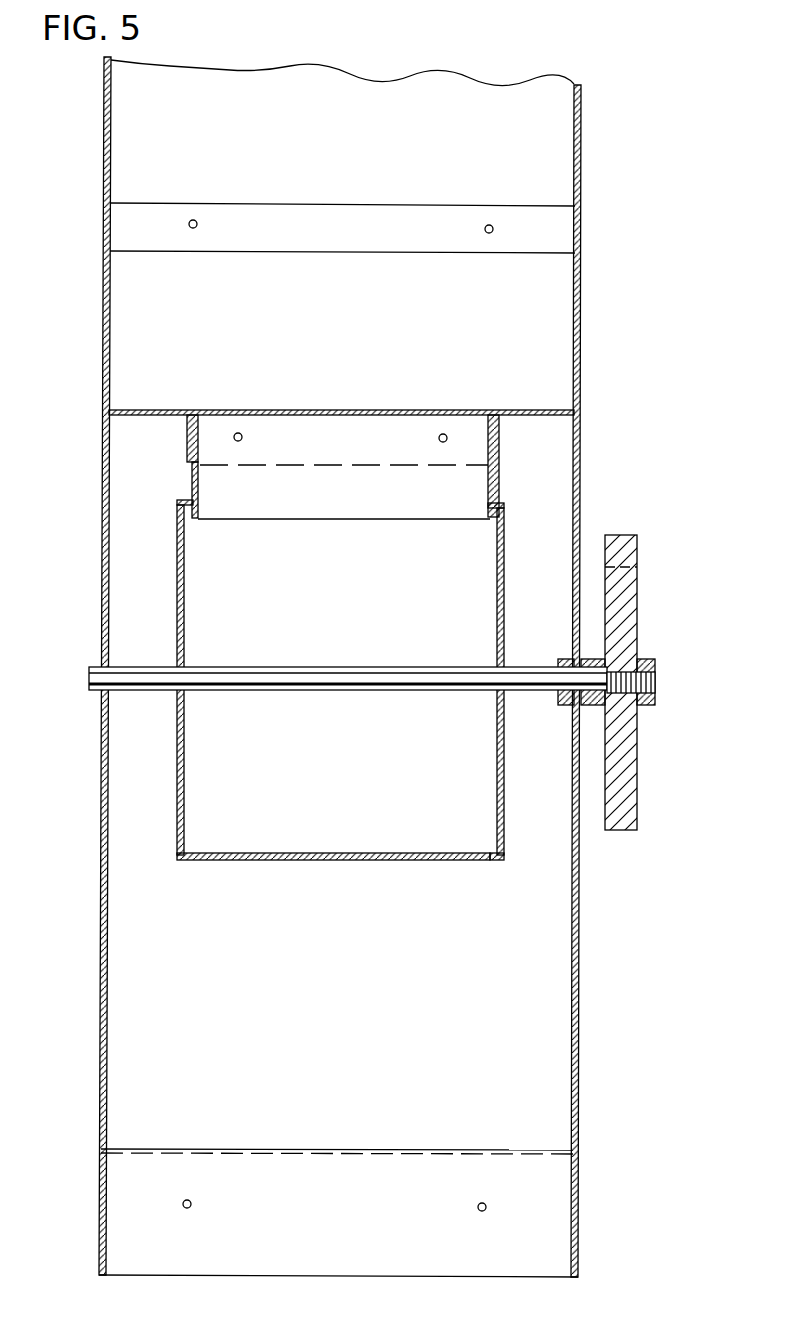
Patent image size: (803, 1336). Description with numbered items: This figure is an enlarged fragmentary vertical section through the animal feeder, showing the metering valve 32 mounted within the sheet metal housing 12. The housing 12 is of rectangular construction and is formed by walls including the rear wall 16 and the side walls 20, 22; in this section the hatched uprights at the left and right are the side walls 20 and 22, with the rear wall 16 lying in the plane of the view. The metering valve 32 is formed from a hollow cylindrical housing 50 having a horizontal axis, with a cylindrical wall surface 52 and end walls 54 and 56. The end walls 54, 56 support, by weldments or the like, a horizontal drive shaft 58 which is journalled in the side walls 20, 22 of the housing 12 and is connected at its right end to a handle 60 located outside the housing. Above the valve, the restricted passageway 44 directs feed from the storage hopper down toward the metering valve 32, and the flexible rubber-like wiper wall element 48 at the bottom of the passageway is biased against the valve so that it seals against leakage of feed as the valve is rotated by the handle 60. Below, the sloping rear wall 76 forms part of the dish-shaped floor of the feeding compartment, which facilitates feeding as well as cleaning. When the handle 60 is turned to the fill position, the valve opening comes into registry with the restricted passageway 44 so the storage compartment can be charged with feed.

The housing 12 is at (590, 255).
The rear wall 16 is at (79, 666).
The side wall 20 is at (104, 290).
The side wall 22 is at (557, 118).
The metering valve 32 is at (285, 706).
The restricted passageway 44 is at (330, 428).
The wiper wall element 48 is at (473, 482).
The hollow cylindrical housing 50 is at (343, 866).
The cylindrical wall surface 52 is at (480, 860).
The end wall 54 is at (184, 757).
The end wall 56 is at (497, 743).
The drive shaft 58 is at (280, 668).
The handle 60 is at (637, 628).
The sloping rear wall 76 is at (553, 1183).